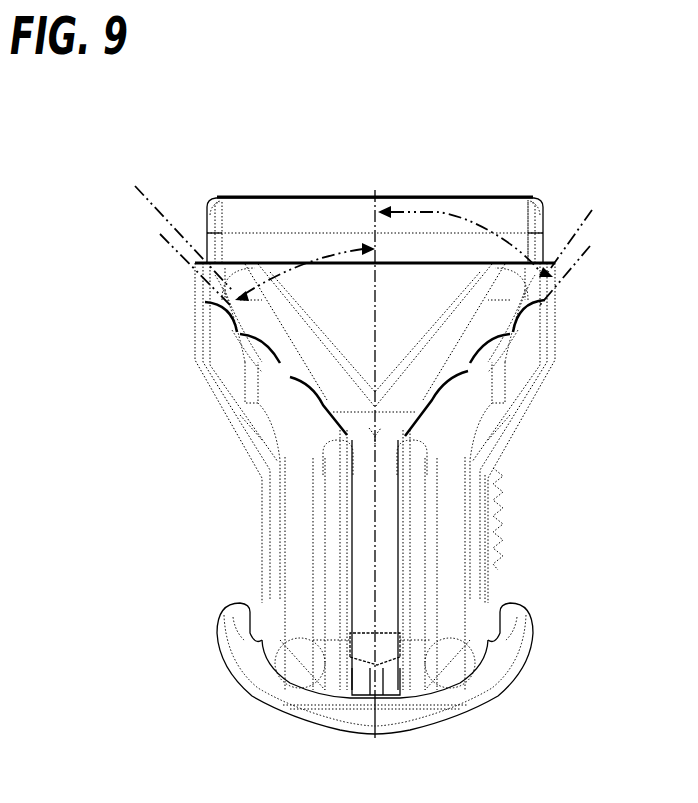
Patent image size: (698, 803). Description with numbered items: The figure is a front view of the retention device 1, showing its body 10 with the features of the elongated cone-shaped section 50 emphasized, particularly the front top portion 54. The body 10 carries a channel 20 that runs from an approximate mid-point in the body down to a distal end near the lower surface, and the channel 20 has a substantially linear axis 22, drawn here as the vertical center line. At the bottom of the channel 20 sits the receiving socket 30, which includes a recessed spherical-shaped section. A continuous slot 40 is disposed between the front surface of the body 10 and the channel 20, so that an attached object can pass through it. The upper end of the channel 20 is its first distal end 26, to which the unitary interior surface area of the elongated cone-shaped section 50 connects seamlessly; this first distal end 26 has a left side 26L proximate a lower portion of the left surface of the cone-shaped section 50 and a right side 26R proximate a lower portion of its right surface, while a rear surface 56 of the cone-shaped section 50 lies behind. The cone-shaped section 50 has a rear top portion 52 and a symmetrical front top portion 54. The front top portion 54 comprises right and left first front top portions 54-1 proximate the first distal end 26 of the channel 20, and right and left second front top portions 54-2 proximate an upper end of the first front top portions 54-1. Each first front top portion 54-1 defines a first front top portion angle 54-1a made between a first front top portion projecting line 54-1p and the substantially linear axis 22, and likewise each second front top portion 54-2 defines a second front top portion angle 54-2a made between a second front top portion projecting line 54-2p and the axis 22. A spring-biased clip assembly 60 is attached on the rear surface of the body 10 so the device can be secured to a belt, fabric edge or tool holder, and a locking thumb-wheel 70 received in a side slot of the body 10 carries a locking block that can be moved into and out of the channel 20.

The retention device 1 is at (160, 280).
The body 10 is at (218, 437).
The channel 20 is at (367, 585).
The substantially linear axis 22 is at (377, 197).
The first distal end 26 is at (380, 428).
The left side 26L is at (347, 435).
The right side 26R is at (380, 428).
The receiving socket 30 is at (383, 646).
The continuous slot 40 is at (350, 512).
The elongated cone-shaped section 50 is at (262, 258).
The rear top portion 52 is at (400, 263).
The front top portion 54 is at (510, 334).
The first front top portions 54-1 is at (468, 371).
The first front top portion angle 54-1a is at (327, 255).
The first front top portion projecting line 54-1p is at (366, 232).
The second front top portions 54-2 is at (545, 300).
The second front top portion angle 54-2a is at (437, 214).
The second front top portion projecting line 54-2p is at (377, 263).
The rear surface 56 is at (375, 332).
The spring-biased clip assembly 60 is at (524, 183).
The locking thumb-wheel 70 is at (497, 528).